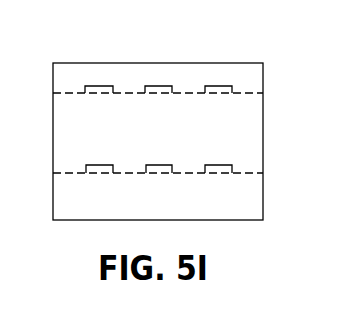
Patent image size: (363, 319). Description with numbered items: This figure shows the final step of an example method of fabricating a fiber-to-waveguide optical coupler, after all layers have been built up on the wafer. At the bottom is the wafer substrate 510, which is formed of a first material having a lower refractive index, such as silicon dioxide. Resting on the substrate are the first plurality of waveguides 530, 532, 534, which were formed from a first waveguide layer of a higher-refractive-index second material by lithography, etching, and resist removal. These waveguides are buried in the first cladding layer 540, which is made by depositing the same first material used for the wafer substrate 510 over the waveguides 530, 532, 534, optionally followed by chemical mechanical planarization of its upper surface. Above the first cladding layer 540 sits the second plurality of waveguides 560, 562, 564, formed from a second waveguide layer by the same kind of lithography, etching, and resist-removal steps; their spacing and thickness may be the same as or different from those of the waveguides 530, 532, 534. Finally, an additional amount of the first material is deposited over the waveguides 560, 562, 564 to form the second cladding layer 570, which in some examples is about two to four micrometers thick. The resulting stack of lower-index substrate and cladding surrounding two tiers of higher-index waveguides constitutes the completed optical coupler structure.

The wafer substrate 510 is at (256, 195).
The first waveguide 530 is at (98, 164).
The first waveguide 532 is at (158, 164).
The first waveguide 534 is at (217, 164).
The first cladding layer 540 is at (258, 121).
The second waveguide 560 is at (98, 85).
The second waveguide 562 is at (158, 85).
The second waveguide 564 is at (217, 85).
The second cladding layer 570 is at (63, 77).